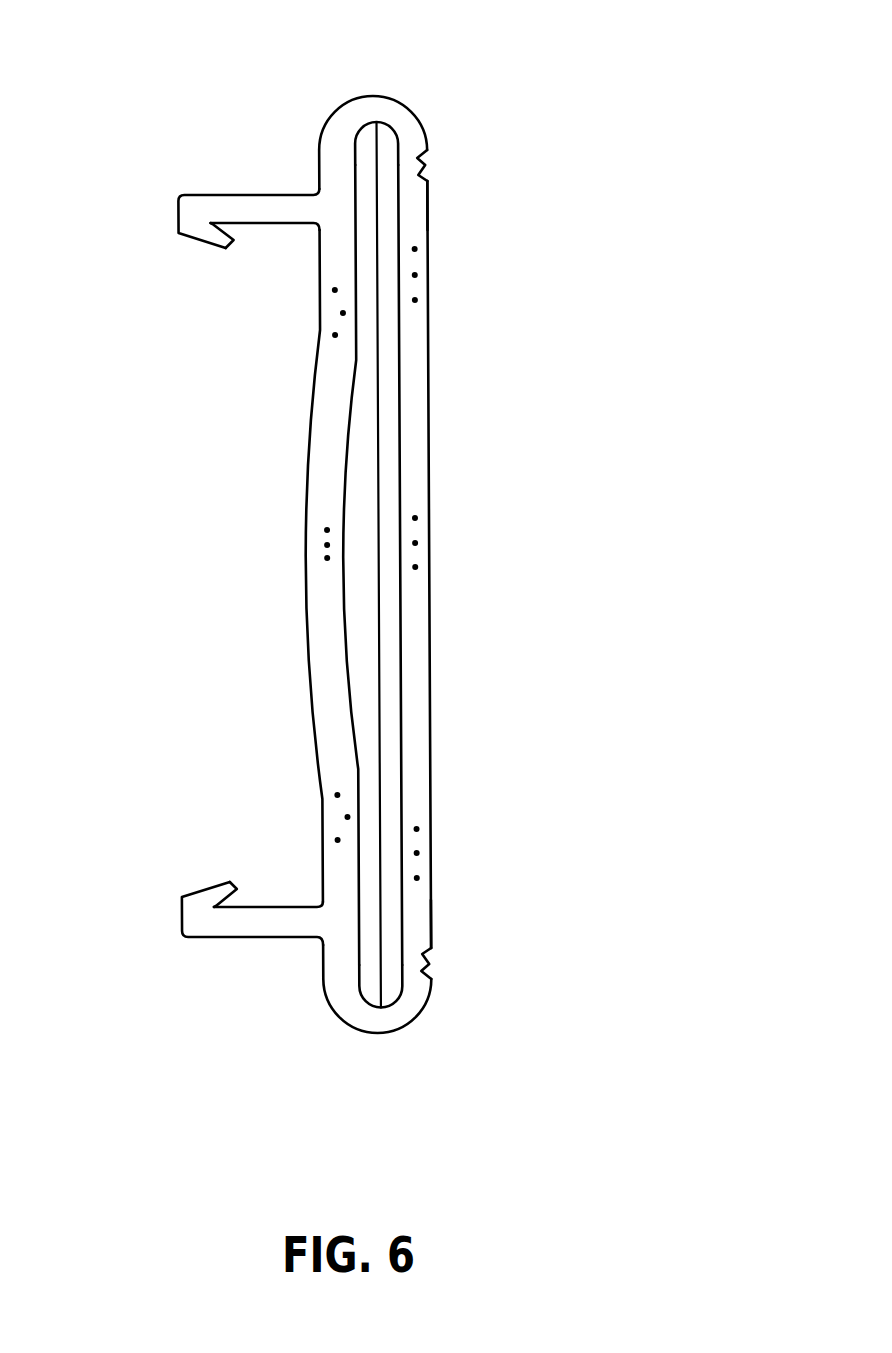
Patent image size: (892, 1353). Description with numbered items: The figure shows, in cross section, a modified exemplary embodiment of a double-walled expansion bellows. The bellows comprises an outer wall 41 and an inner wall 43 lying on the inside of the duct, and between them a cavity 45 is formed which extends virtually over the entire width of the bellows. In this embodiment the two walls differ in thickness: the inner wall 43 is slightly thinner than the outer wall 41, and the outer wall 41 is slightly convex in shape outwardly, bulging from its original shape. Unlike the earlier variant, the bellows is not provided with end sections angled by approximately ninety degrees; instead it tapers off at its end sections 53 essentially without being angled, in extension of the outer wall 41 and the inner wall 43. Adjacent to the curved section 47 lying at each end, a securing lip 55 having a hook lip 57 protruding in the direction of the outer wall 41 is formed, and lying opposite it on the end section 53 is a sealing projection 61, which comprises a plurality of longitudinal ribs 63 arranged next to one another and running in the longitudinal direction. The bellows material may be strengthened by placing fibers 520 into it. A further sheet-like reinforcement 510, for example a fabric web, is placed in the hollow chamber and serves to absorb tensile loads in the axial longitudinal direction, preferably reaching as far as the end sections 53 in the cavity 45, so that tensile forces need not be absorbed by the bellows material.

The outer wall 41 is at (323, 480).
The inner wall 43 is at (410, 586).
The cavity 45 is at (370, 675).
The curved section 47 is at (369, 110).
The end section 53 is at (346, 76).
The securing lip 55 is at (238, 209).
The hook lip 57 is at (211, 237).
The sealing projection 61 is at (449, 159).
The longitudinal ribs 63 is at (427, 160).
The sheet-like reinforcement 510 is at (378, 455).
The fibers 520 is at (343, 313).